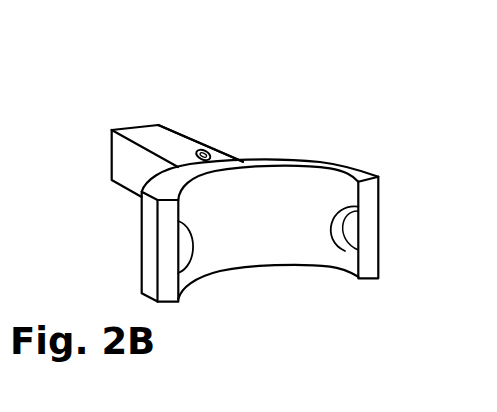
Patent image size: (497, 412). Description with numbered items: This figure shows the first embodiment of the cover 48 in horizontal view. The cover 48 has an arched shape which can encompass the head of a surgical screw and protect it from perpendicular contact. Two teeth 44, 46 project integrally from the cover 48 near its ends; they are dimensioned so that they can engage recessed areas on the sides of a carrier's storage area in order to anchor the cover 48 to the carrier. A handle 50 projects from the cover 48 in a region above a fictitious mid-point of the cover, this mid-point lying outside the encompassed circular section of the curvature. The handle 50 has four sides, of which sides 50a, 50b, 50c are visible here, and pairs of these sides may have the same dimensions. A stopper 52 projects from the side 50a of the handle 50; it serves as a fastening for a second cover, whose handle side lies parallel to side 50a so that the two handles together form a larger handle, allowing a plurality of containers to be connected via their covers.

The cover 48 is at (323, 80).
The handle 50 is at (163, 131).
The side of handle 50a is at (147, 133).
The side of handle 50b is at (181, 127).
The side of handle 50c is at (125, 163).
The stopper 52 is at (212, 153).
The tooth 44 is at (185, 249).
The tooth 46 is at (353, 236).